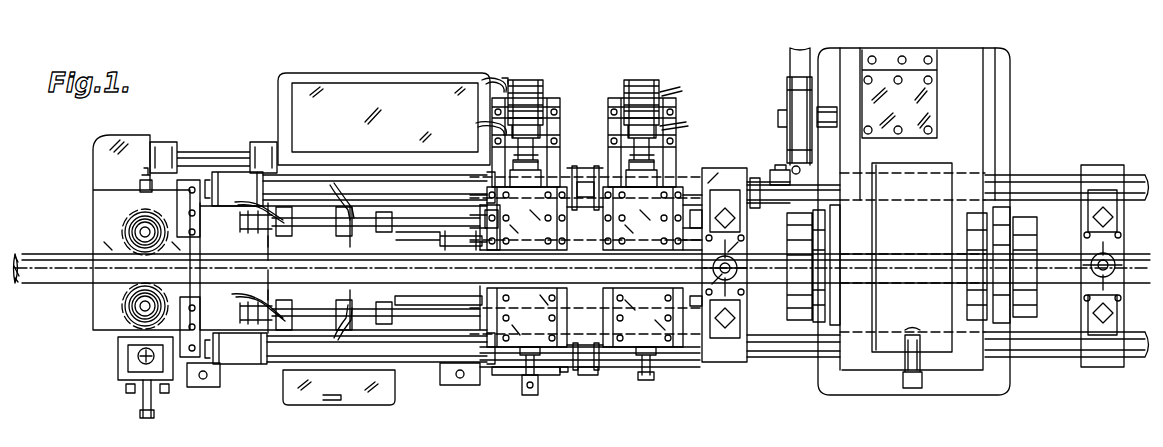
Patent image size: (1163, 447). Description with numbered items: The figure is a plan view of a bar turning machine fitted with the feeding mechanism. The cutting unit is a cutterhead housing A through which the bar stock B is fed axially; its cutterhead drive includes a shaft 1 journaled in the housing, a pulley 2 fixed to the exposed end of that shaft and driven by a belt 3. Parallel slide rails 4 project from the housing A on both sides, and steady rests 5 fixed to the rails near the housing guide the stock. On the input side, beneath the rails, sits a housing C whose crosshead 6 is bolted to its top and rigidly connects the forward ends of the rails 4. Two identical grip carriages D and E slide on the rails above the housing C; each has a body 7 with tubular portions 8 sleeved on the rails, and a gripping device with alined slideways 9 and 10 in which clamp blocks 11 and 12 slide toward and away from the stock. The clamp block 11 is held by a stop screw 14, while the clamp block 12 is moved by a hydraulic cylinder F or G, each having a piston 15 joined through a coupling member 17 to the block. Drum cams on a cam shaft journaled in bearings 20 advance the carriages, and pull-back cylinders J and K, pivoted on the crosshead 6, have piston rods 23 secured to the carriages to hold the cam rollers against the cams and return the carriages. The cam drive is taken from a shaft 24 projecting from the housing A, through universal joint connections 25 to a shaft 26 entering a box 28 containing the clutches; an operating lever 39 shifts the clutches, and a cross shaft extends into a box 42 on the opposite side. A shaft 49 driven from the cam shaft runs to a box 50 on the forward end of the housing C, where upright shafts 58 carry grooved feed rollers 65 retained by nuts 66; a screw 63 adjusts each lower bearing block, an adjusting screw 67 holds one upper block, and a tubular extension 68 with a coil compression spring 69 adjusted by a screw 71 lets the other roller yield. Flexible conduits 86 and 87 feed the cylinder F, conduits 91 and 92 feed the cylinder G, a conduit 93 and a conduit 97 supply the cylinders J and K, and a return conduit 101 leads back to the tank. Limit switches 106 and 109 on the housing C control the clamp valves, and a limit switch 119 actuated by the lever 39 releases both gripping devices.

The shaft 1 is at (823, 107).
The pulley 2 is at (786, 90).
The belt 3 is at (793, 63).
The slide rails 4 is at (390, 180).
The steady rest 5 is at (757, 230).
The crosshead 6 is at (233, 170).
The body 7 is at (560, 368).
The tubular portions 8 is at (492, 175).
The slideway 9 is at (480, 298).
The slideway 10 is at (485, 212).
The clamp block 11 is at (530, 290).
The clamp block 12 is at (518, 248).
The stop screw 14 is at (540, 352).
The piston 15 is at (540, 160).
The coupling member 17 is at (598, 172).
The bearings 20 is at (412, 244).
The piston rods 23 is at (430, 228).
The shaft 24 is at (752, 178).
The universal joint connections 25 is at (780, 165).
The shaft 26 is at (690, 190).
The box 28 is at (285, 73).
The operating lever 39 is at (530, 396).
The box 42 is at (283, 402).
The shaft 49 is at (200, 150).
The box 50 is at (115, 138).
The upright shafts 58 is at (145, 225).
The screw 63 is at (124, 390).
The feed roller 65 is at (124, 224).
The nut 66 is at (133, 232).
The adjusting screw 67 is at (146, 176).
The tubular extension 68 is at (130, 362).
The coil compression spring 69 is at (138, 354).
The screw 71 is at (141, 402).
The flexible conduit 86 is at (494, 78).
The flexible conduit 87 is at (478, 120).
The flexible conduit 91 is at (690, 122).
The flexible conduit 92 is at (678, 86).
The conduit 93 is at (336, 180).
The conduit 97 is at (348, 326).
The return conduit 101 is at (270, 200).
The limit switch 106 is at (500, 378).
The limit switch 109 is at (590, 378).
The limit switch 119 is at (564, 375).
The cutterhead housing A is at (969, 148).
The bar stock B is at (40, 255).
The housing C is at (462, 327).
The carriage D is at (569, 95).
The carriage E is at (687, 98).
The hydraulic cylinder F is at (524, 110).
The hydraulic cylinder G is at (642, 108).
The hydraulic cylinder J is at (310, 224).
The hydraulic cylinder K is at (305, 318).